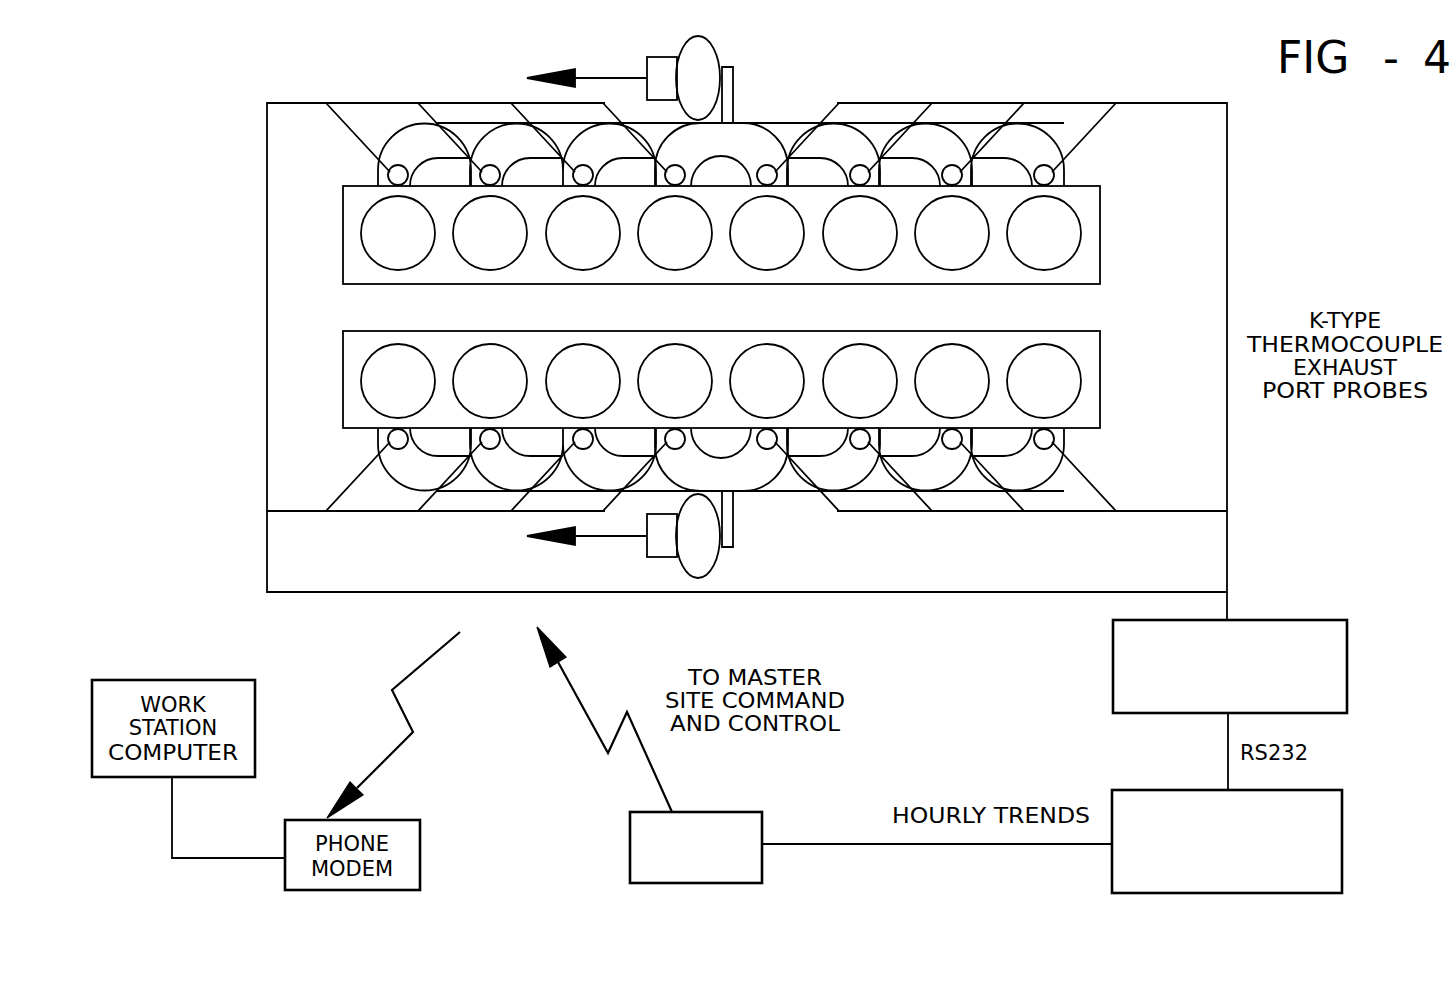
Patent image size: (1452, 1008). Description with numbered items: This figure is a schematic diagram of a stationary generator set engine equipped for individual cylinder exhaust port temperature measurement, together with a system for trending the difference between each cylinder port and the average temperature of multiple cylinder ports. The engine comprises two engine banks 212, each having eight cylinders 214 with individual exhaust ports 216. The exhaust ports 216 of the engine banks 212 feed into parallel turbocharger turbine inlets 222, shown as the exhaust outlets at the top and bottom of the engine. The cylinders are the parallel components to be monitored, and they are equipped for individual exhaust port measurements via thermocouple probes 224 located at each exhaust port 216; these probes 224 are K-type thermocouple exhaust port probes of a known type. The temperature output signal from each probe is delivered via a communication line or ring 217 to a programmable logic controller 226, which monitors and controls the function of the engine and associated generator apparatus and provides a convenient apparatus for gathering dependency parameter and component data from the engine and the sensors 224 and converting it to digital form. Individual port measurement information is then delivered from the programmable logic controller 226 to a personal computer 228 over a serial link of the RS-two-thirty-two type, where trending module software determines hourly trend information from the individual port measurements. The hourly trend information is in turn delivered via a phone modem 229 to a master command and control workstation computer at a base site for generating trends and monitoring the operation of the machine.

The engine bank 212 is at (1100, 218).
The cylinder 214 is at (763, 353).
The exhaust port 216 is at (1064, 428).
The communication line or ring 217 is at (1227, 602).
The turbocharger turbine inlet 222 is at (738, 118).
The thermocouple probe 224 is at (859, 165).
The programmable logic controller 226 is at (1113, 670).
The personal computer 228 is at (1125, 790).
The phone modem 229 is at (762, 824).